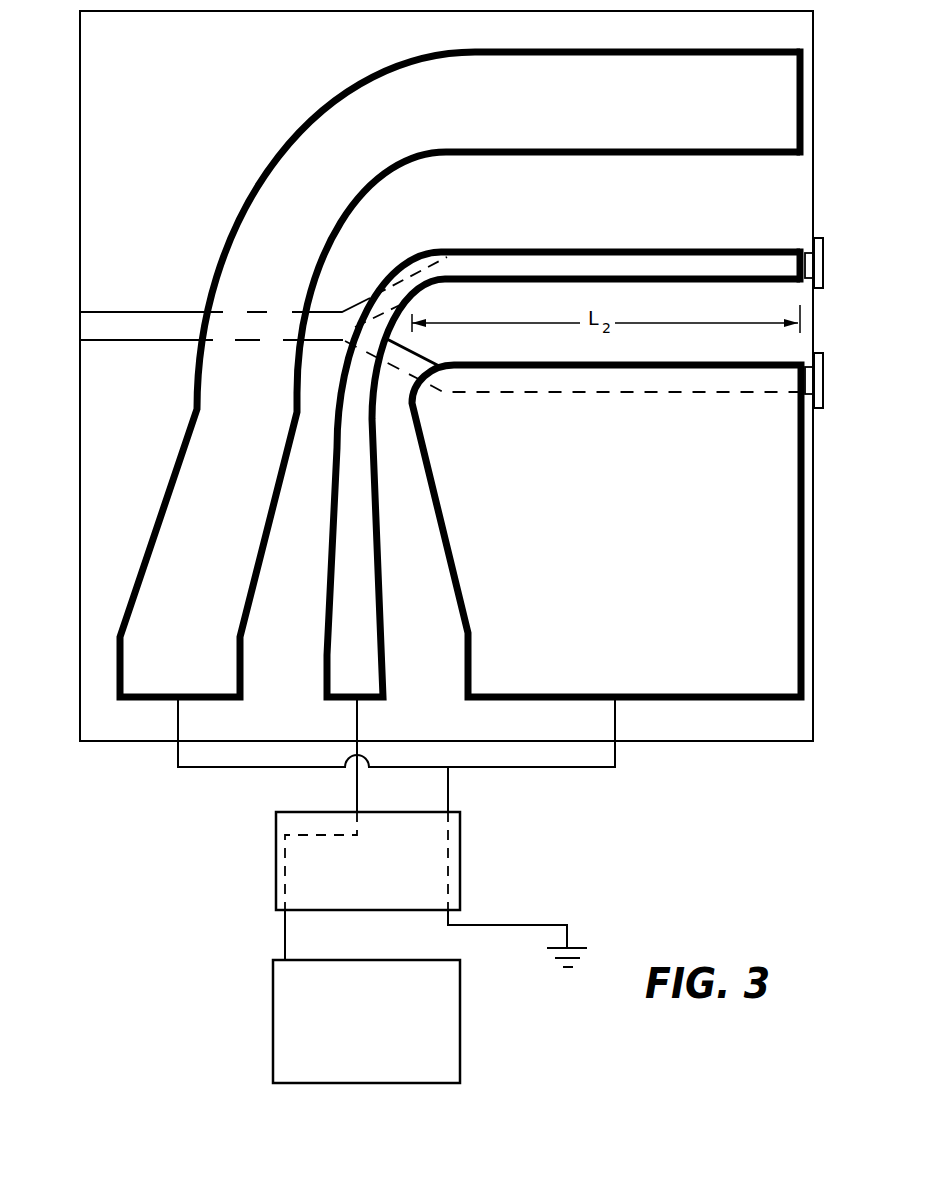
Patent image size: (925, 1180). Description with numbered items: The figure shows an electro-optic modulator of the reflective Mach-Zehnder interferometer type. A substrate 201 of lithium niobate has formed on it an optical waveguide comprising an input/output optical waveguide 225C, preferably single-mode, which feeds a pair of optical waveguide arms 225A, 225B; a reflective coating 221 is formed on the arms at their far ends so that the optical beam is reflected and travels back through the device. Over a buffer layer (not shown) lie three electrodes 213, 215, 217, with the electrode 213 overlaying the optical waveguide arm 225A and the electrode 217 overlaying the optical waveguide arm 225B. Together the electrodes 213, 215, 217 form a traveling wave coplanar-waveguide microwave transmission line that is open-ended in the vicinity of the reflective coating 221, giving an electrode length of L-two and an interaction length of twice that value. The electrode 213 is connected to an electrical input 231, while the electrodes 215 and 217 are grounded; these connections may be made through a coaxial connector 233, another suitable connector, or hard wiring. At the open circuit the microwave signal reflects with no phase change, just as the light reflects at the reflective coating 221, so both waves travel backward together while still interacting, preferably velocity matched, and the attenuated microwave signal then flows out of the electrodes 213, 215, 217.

The substrate 201 is at (97, 134).
The electrode 213 is at (337, 662).
The electrode 215 is at (180, 474).
The electrode 217 is at (487, 655).
The reflective coating 221 is at (825, 378).
The optical waveguide arm 225A is at (510, 265).
The optical waveguide arm 225B is at (579, 380).
The input/output optical waveguide 225C is at (136, 318).
The electrical input 231 is at (282, 983).
The coaxial connector 233 is at (277, 850).